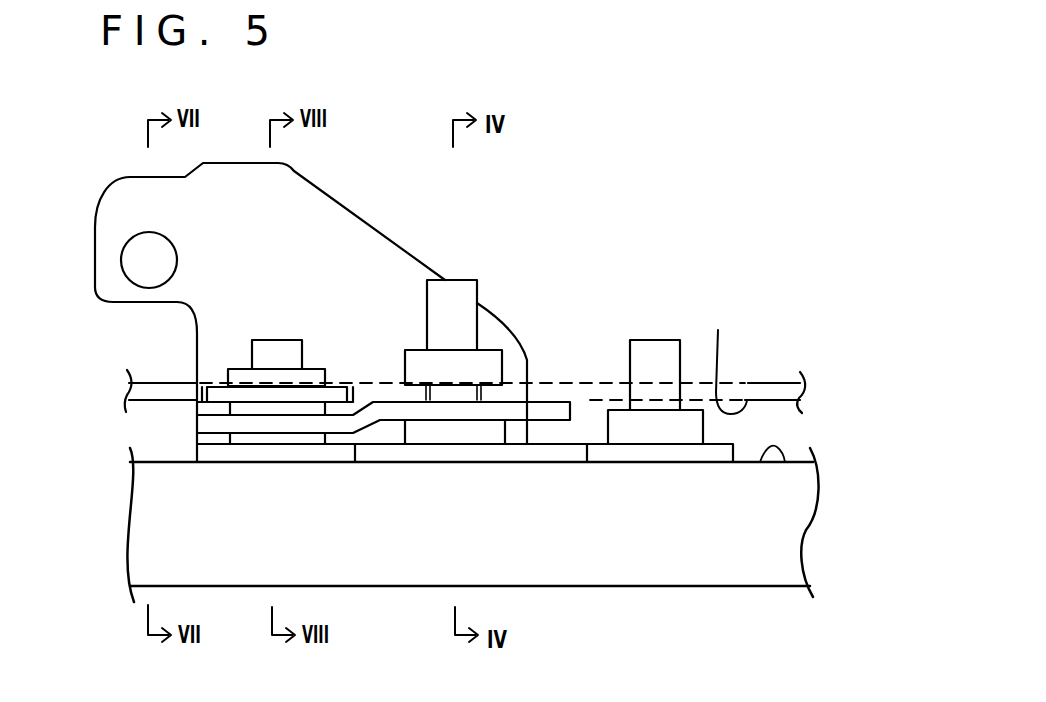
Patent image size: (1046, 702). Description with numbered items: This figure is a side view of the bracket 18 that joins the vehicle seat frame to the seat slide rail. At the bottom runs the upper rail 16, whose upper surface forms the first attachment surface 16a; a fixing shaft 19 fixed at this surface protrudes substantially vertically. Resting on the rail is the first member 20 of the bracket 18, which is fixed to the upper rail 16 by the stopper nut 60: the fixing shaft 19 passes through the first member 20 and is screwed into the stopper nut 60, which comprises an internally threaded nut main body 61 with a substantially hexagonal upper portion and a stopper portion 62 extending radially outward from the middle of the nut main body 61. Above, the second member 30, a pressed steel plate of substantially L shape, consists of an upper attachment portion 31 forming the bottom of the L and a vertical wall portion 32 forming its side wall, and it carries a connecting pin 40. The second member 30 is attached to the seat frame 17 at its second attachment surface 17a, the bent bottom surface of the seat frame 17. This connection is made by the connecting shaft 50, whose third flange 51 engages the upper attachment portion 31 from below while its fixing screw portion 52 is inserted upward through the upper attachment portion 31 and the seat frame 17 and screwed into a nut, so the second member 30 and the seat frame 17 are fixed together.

The upper rail 16 is at (683, 537).
The first attachment surface 16a is at (785, 463).
The seat frame 17 is at (774, 385).
The second attachment surface 17a is at (718, 330).
The bracket 18 is at (673, 192).
The fixing shaft 19 is at (270, 345).
The first member 20 is at (637, 455).
The second member 30 is at (332, 281).
The upper attachment portion 31 is at (383, 293).
The vertical wall portion 32 is at (295, 237).
The connecting pin 40 is at (140, 250).
The connecting shaft 50 is at (497, 302).
The third flange 51 is at (478, 427).
The fixing screw portion 52 is at (465, 305).
The stopper nut 60 is at (311, 540).
The nut main body 61 is at (293, 408).
The stopper portion 62 is at (335, 397).